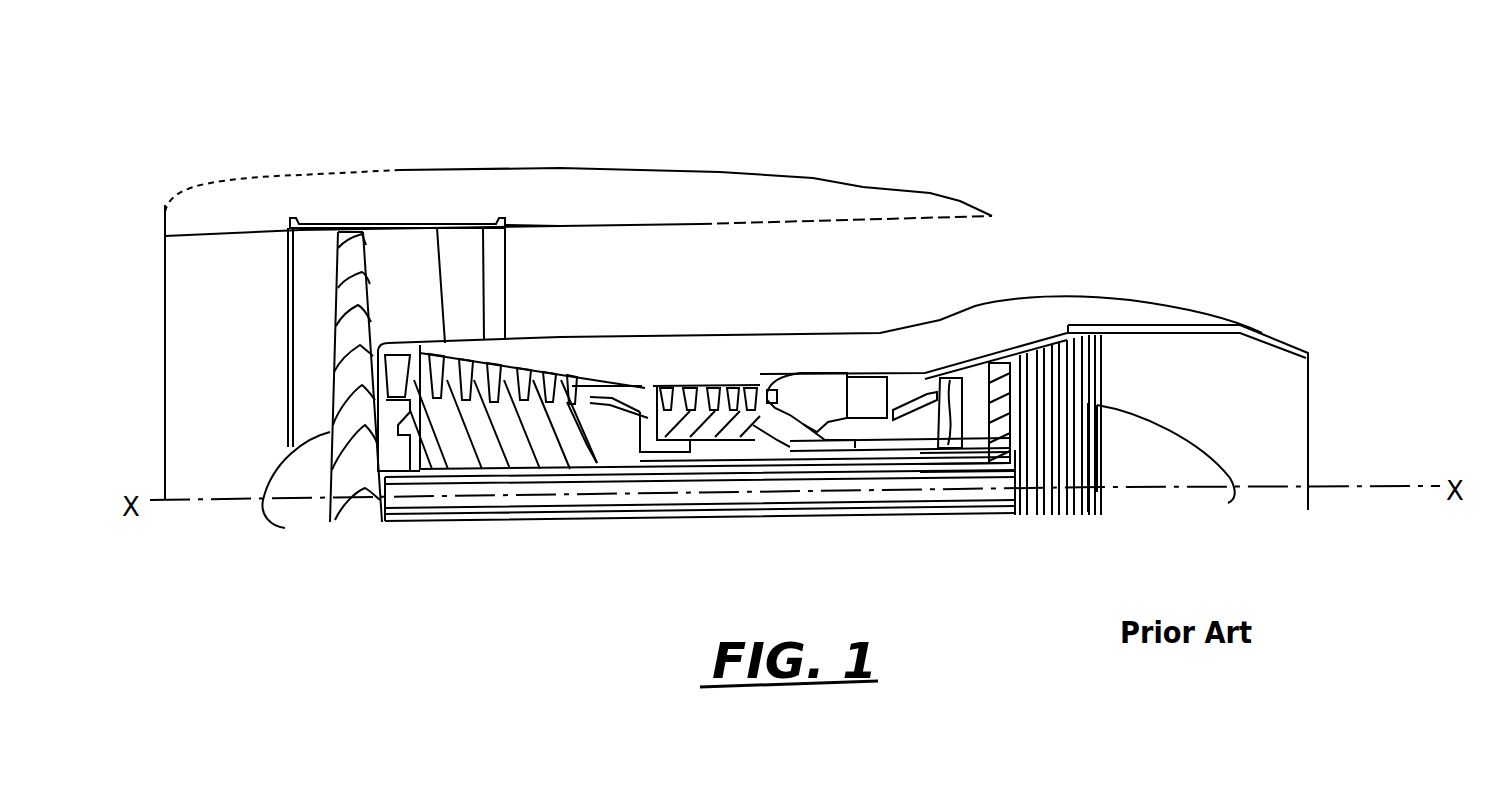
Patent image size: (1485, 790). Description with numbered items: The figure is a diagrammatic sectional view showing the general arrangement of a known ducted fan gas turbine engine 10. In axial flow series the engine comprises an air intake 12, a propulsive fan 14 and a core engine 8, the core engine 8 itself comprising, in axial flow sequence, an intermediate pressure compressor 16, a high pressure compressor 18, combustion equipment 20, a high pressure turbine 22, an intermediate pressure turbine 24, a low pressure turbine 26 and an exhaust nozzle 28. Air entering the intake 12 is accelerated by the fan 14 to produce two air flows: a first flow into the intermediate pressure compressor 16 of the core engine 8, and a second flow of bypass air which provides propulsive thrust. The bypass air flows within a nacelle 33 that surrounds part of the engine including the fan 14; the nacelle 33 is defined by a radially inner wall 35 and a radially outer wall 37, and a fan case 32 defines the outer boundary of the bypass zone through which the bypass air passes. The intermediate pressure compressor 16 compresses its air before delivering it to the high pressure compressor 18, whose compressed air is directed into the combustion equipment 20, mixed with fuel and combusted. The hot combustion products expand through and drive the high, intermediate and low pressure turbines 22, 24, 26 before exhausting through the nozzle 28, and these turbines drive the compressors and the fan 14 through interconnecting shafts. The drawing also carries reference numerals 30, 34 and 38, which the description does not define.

The core engine 8 is at (688, 354).
The ducted fan gas turbine engine 10 is at (712, 237).
The air intake 12 is at (262, 349).
The propulsive fan 14 is at (372, 257).
The intermediate pressure compressor 16 is at (510, 413).
The high pressure compressor 18 is at (712, 385).
The combustion equipment 20 is at (872, 357).
The high pressure turbine 22 is at (940, 375).
The intermediate pressure turbine 24 is at (1000, 375).
The low pressure turbine 26 is at (1090, 418).
The exhaust nozzle 28 is at (1293, 440).
The shaft 30 is at (822, 395).
The fan case 32 is at (868, 440).
The shaft 34 is at (842, 376).
The nacelle 33 is at (278, 174).
The radially inner wall 35 is at (598, 228).
The radially outer wall 37 is at (556, 162).
The combustor 38 is at (822, 378).